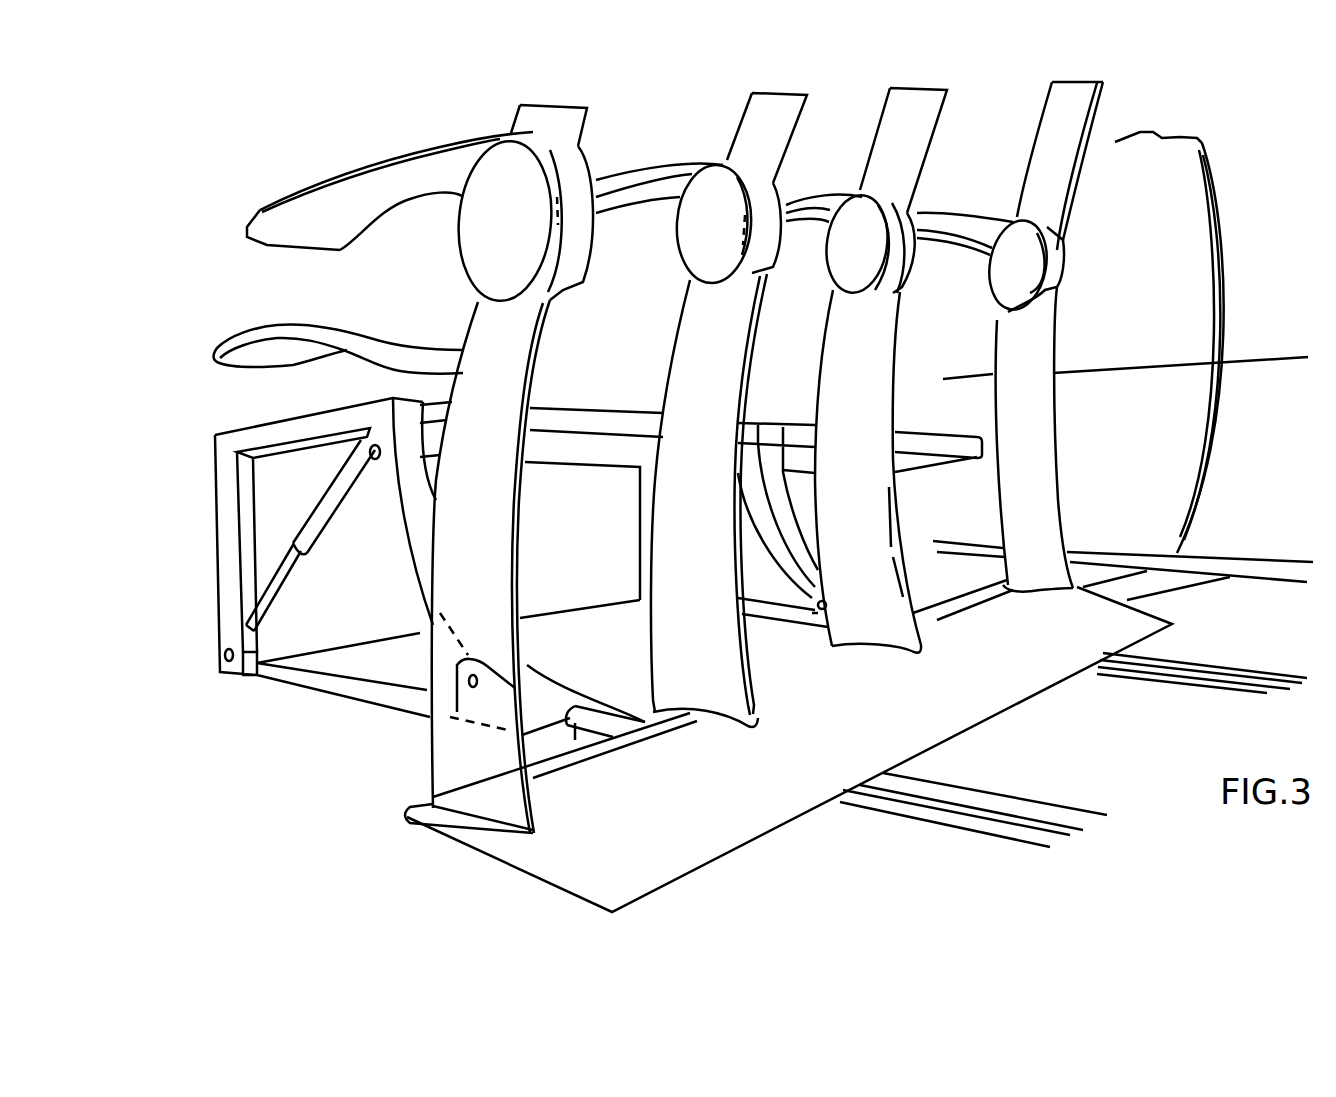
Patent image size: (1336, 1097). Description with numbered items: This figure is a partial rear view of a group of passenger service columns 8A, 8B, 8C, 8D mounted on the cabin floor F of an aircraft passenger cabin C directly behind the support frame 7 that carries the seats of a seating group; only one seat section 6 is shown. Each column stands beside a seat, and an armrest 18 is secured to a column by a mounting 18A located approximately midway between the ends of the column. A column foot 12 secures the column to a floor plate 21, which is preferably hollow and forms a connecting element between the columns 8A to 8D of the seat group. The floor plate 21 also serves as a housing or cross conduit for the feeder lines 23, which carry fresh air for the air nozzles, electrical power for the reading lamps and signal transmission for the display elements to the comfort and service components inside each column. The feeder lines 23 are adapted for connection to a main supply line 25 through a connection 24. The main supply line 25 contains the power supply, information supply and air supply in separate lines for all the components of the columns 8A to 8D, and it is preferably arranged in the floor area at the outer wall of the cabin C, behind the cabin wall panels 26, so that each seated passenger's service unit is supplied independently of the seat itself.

The seat section 6 is at (393, 353).
The support frame 7 is at (208, 703).
The passenger service column 8A is at (548, 120).
The passenger service column 8B is at (770, 113).
The passenger service column 8C is at (910, 103).
The passenger service column 8D is at (1078, 93).
The column foot 12 is at (457, 800).
The armrest 18 is at (418, 170).
The mounting 18A is at (524, 243).
The floor plate 21 is at (558, 867).
The feeder lines 23 is at (1167, 583).
The connection 24 is at (1227, 577).
The main supply line 25 is at (1248, 566).
The cabin wall panels 26 is at (1198, 227).
The aircraft passenger cabin C is at (1240, 281).
The cabin floor F is at (1210, 688).